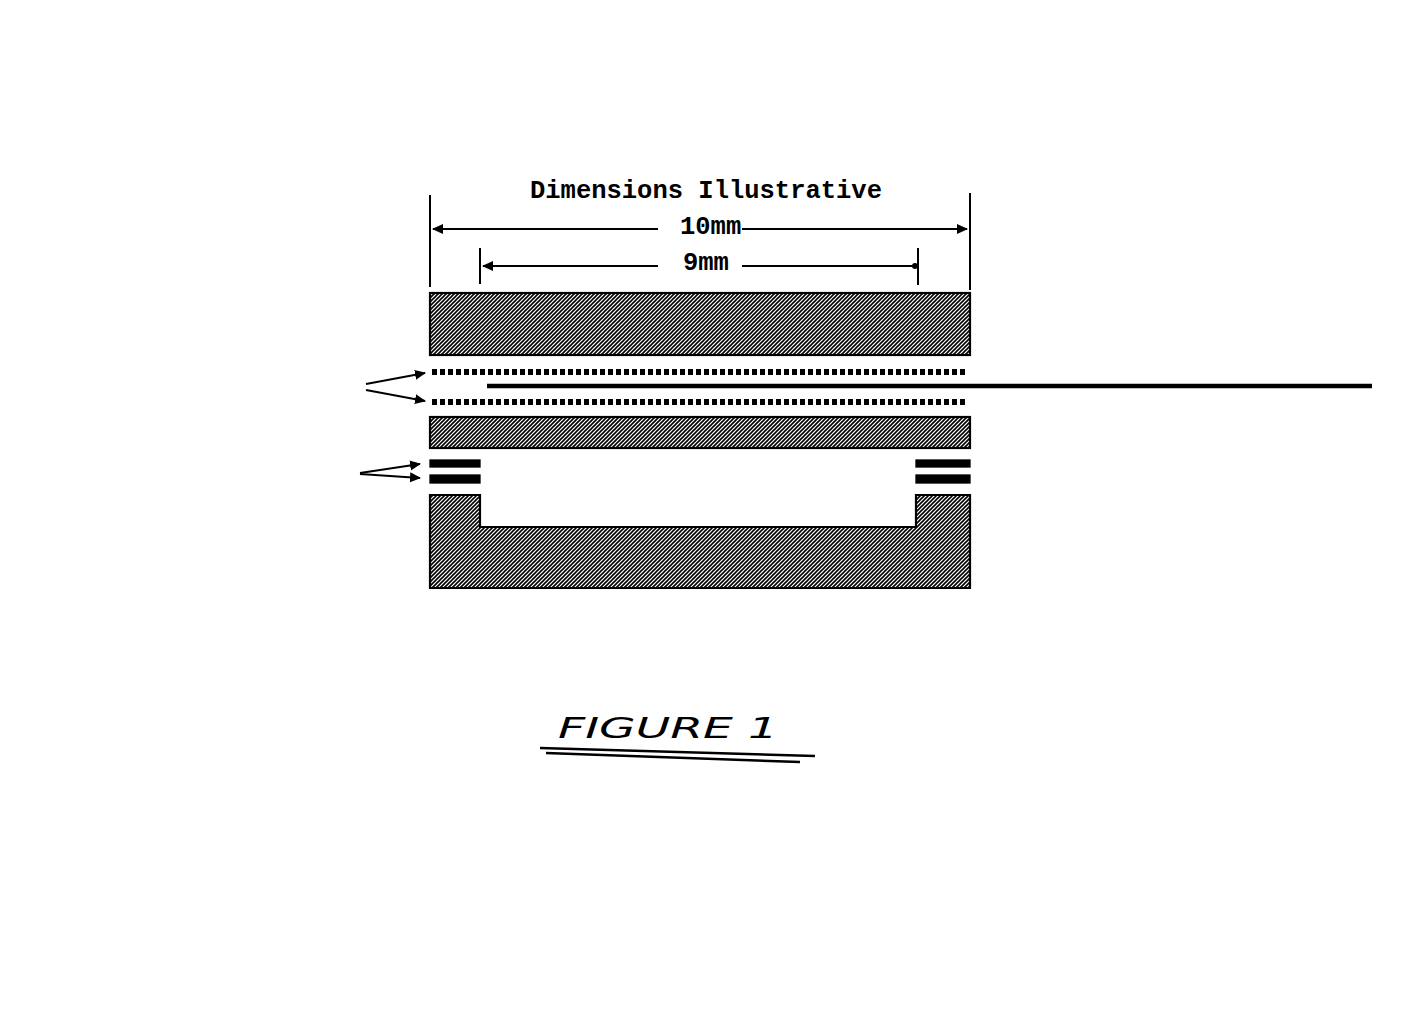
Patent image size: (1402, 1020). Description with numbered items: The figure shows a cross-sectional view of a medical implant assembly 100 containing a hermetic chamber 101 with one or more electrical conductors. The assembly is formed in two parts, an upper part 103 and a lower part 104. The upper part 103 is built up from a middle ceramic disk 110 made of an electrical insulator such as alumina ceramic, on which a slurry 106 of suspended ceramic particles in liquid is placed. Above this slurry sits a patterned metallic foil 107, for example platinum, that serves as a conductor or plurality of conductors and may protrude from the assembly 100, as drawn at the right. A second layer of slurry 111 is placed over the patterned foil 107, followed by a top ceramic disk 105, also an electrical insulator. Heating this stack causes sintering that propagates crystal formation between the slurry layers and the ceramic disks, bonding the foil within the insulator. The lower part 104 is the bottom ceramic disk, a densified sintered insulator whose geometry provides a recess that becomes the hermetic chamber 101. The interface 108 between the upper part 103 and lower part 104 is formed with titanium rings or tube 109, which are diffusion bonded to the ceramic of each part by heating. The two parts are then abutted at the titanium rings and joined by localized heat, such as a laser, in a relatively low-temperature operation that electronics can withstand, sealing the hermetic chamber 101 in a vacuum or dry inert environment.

The medical implant assembly 100 is at (1027, 186).
The hermetic chamber 101 is at (677, 496).
The upper part 103 is at (128, 282).
The lower part 104 is at (969, 578).
The top ceramic disk 105 is at (975, 306).
The slurry 106 is at (968, 402).
The patterned foil 107 is at (1172, 390).
The interface 108 is at (978, 478).
The titanium rings or tube 109 is at (157, 485).
The middle ceramic disk 110 is at (130, 419).
The slurry 111 is at (968, 372).